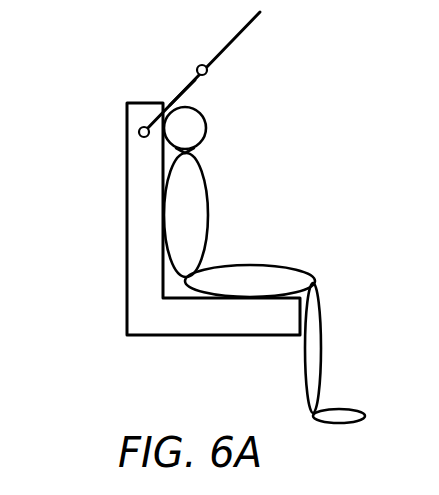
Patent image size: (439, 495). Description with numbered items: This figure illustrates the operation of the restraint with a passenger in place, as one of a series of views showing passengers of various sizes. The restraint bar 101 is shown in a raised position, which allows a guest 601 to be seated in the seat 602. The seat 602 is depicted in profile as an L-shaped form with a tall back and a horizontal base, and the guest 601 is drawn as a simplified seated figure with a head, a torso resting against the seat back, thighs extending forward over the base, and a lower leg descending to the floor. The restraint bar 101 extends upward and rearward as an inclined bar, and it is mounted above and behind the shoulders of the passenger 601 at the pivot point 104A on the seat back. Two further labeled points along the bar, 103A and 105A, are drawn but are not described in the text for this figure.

The restraint bar 101 is at (237, 38).
The upper belt anchor point 103A is at (207, 75).
The pivot point 104A is at (139, 135).
The belt segment 105A is at (182, 90).
The guest 601 is at (212, 205).
The seat 602 is at (127, 231).